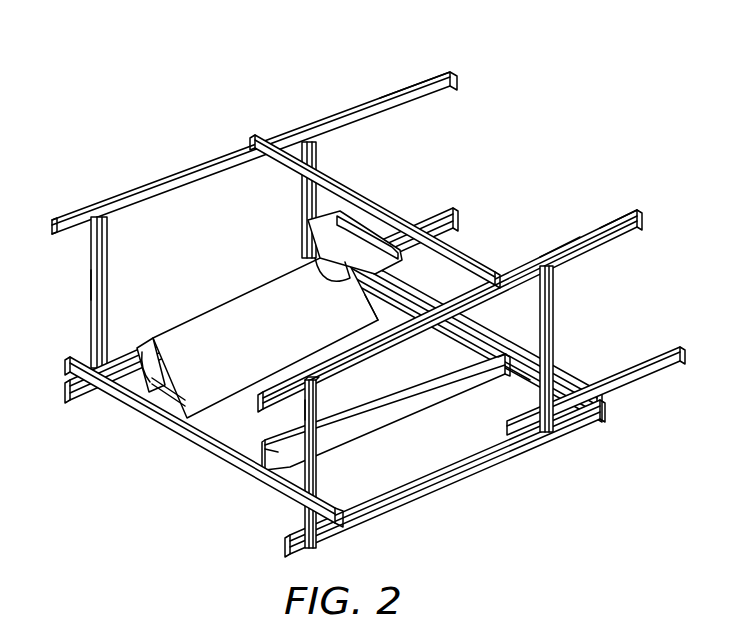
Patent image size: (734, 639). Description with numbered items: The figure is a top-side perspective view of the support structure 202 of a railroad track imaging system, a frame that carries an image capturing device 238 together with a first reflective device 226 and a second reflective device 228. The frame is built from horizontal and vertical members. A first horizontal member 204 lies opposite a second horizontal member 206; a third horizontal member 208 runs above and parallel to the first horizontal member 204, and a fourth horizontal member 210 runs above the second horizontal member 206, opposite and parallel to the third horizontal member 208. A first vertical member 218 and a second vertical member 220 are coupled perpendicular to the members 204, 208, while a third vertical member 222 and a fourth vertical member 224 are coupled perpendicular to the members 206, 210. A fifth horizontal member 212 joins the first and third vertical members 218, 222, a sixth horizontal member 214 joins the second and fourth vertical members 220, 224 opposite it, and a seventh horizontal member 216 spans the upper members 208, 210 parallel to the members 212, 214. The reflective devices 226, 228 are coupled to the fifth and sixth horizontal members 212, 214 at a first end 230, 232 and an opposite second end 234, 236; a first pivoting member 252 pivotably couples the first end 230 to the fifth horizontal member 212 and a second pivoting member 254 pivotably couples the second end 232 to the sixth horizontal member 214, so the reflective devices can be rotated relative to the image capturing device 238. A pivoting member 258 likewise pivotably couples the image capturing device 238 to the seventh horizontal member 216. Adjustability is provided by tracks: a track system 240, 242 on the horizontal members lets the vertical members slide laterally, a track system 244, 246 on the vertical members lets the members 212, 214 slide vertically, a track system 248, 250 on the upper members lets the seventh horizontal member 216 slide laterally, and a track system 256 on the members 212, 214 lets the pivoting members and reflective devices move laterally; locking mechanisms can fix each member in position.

The support structure 202 is at (160, 128).
The first horizontal member 204 is at (70, 394).
The second horizontal member 206 is at (447, 470).
The third horizontal member 208 is at (172, 190).
The fourth horizontal member 210 is at (617, 232).
The fifth horizontal member 212 is at (200, 443).
The sixth horizontal member 214 is at (565, 392).
The seventh horizontal member 216 is at (355, 192).
The first vertical member 218 is at (108, 265).
The second vertical member 220 is at (318, 150).
The third vertical member 222 is at (318, 476).
The fourth vertical member 224 is at (555, 330).
The first reflective device 226 is at (227, 311).
The second reflective device 228 is at (432, 403).
The first end of the first reflective device 230 is at (150, 404).
The second end of the first reflective device 232 is at (387, 332).
The second end of the reflective device 234 is at (503, 345).
The second end of the reflective device 236 is at (295, 470).
The image capturing device 238 is at (308, 228).
The track system 240 is at (660, 366).
The track system 242 is at (606, 218).
The track system 244 is at (82, 285).
The track system 246 is at (298, 414).
The track system 248 is at (412, 82).
The track system 250 is at (556, 233).
The first pivoting member 252 is at (143, 383).
The second pivoting member 254 is at (380, 283).
The track system 256 is at (516, 375).
The pivoting member 258 is at (378, 212).